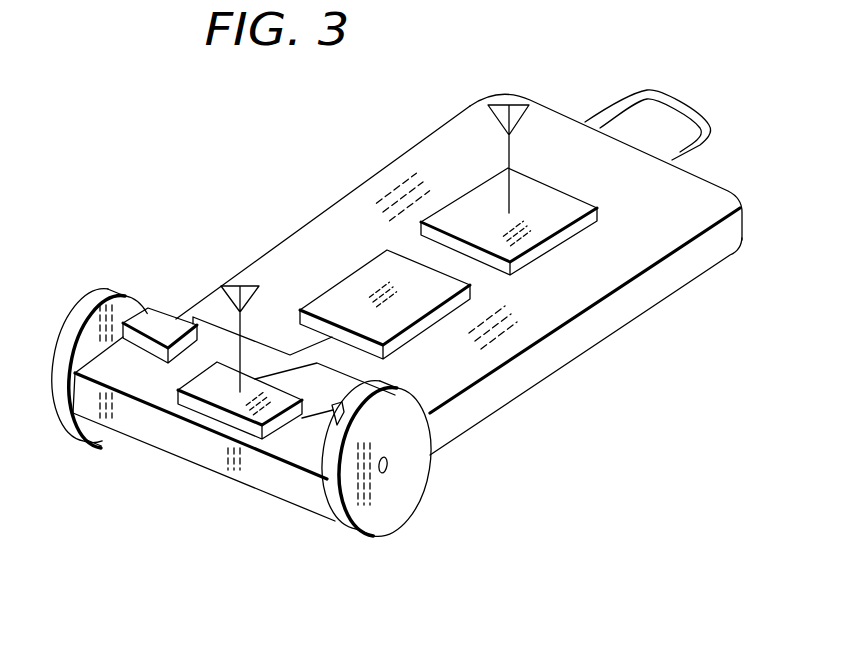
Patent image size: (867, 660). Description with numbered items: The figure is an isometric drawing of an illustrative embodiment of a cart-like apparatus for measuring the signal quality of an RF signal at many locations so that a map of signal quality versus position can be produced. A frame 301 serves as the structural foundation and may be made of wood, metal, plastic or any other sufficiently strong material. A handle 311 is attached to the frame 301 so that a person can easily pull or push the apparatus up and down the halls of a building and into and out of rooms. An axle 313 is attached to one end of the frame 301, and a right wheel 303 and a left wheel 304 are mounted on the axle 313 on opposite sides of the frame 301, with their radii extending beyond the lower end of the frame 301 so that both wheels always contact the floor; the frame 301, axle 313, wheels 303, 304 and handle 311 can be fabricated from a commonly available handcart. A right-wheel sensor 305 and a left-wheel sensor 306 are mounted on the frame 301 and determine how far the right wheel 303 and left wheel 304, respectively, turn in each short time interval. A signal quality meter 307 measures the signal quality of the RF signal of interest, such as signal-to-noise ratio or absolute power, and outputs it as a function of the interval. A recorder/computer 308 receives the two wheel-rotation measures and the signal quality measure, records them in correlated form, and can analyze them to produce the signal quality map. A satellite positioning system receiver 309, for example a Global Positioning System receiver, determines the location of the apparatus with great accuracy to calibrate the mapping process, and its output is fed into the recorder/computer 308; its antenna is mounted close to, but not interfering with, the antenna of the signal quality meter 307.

The frame 301 is at (665, 287).
The right wheel 303 is at (380, 522).
The left wheel 304 is at (88, 300).
The right-wheel sensor 305 is at (263, 490).
The left-wheel sensor 306 is at (157, 312).
The signal quality meter 307 is at (213, 412).
The recorder/computer 308 is at (368, 273).
The satellite positioning system receiver 309 is at (596, 206).
The handle 311 is at (647, 90).
The axle 313 is at (390, 467).